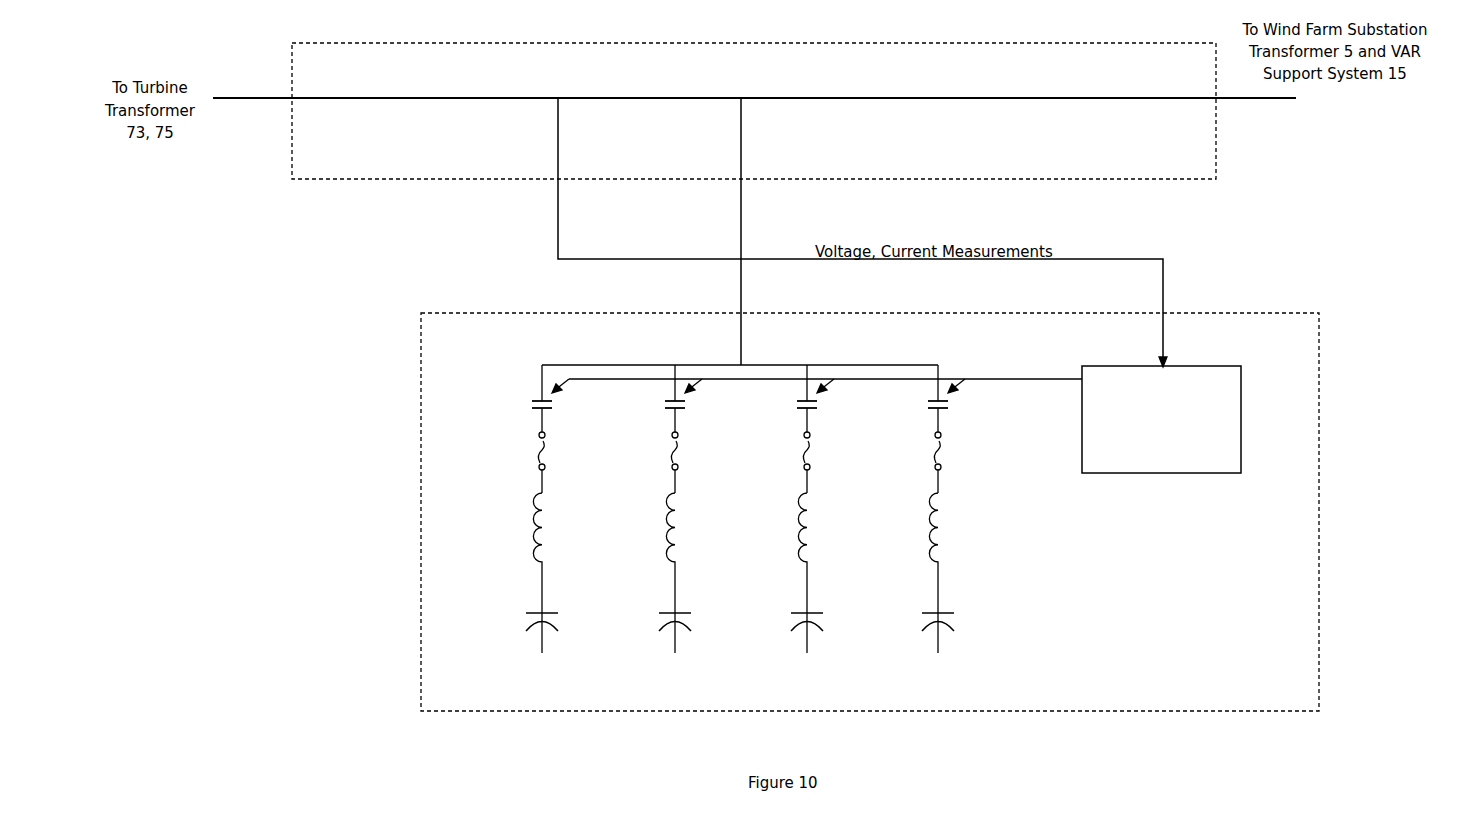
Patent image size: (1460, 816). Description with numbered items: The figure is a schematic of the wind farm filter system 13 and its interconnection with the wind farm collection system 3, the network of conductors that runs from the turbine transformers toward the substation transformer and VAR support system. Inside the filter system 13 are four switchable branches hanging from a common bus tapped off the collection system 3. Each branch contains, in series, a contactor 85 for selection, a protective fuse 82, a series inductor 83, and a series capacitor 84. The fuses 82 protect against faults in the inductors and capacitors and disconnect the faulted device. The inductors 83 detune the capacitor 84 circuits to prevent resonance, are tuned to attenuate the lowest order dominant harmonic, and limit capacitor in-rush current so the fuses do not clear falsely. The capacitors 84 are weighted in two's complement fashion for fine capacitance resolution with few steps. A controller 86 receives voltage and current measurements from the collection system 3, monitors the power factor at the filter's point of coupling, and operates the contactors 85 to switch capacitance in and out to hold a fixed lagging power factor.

The wind farm collection system 3 is at (1110, 43).
The wind farm filter system 13 is at (1257, 312).
The controller 86 is at (1128, 479).
The contactors 85 is at (727, 398).
The protective fuses 82 is at (715, 462).
The series inductors 83 is at (714, 553).
The series capacitors 84 is at (722, 630).